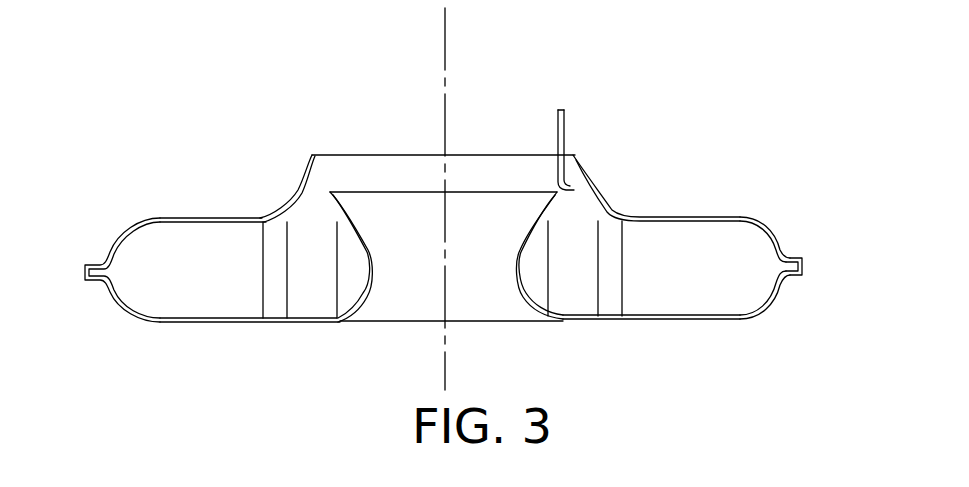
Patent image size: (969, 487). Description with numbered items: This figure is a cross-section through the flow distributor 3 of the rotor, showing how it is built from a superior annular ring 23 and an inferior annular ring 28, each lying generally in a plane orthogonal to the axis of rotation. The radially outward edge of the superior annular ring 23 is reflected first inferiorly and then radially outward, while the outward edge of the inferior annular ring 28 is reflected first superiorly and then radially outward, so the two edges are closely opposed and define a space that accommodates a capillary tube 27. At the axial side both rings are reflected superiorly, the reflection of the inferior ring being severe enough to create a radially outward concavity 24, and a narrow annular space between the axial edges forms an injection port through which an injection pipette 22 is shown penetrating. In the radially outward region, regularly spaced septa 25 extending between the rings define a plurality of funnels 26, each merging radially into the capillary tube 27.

The flow distributor 3 is at (485, 217).
The injection pipette 22 is at (568, 137).
The superior annular ring 23 is at (665, 215).
The radially outward concavity 24 is at (533, 205).
The septa 25 is at (555, 268).
The funnel 26 is at (762, 263).
The capillary tube 27 is at (795, 277).
The inferior annular ring 28 is at (673, 319).